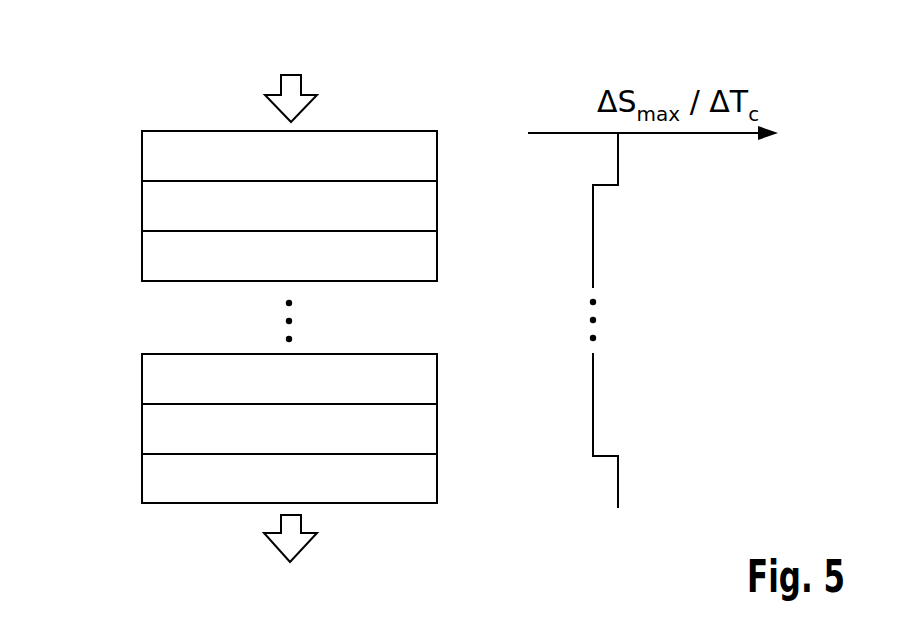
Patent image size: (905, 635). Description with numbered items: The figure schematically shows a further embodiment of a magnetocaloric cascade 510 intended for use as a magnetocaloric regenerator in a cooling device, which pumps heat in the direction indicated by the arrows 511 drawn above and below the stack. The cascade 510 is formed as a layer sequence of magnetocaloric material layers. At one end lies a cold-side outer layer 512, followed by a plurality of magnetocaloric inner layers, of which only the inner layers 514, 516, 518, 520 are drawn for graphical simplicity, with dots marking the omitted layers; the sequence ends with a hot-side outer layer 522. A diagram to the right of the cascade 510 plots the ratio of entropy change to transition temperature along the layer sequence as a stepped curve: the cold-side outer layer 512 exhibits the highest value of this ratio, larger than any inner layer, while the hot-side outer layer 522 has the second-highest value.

The magnetocaloric cascade 510 is at (435, 94).
The arrows 511 is at (301, 86).
The cold-side outer layer 512 is at (142, 155).
The magnetocaloric inner layer 514 is at (142, 205).
The magnetocaloric inner layer 516 is at (142, 263).
The magnetocaloric inner layer 518 is at (142, 379).
The magnetocaloric inner layer 520 is at (142, 428).
The hot-side outer layer 522 is at (142, 487).